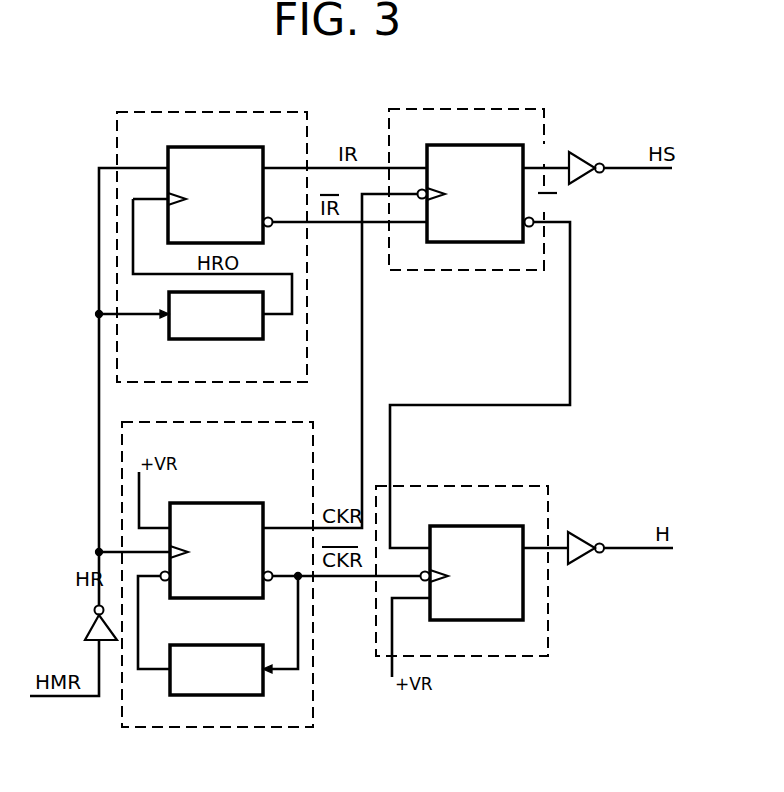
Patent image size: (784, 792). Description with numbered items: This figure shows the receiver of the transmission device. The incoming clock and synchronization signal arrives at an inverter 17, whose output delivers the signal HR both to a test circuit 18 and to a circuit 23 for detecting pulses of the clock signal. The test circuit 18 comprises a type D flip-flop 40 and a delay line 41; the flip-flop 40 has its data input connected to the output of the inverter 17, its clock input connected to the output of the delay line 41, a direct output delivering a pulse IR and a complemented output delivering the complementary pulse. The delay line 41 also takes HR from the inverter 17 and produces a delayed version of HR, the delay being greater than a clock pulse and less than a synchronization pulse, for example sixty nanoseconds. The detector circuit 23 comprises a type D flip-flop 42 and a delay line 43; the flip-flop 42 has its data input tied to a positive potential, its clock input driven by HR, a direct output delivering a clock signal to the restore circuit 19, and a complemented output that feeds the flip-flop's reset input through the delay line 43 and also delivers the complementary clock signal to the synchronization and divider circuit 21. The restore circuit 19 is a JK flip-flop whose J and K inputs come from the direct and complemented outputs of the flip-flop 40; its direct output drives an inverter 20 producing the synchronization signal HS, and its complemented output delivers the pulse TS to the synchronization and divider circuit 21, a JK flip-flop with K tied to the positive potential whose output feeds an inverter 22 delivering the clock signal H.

The inverter 17 is at (92, 630).
The test circuit 18 is at (148, 114).
The restore circuit 19 is at (493, 118).
The inverter 20 is at (580, 156).
The synchronization and divider circuit 21 is at (495, 496).
The inverter 22 is at (583, 536).
The detector circuit 23 is at (167, 431).
The type D flip-flop 40 is at (233, 152).
The delay line 41 is at (200, 328).
The type D flip-flop 42 is at (232, 512).
The delay line 43 is at (233, 648).